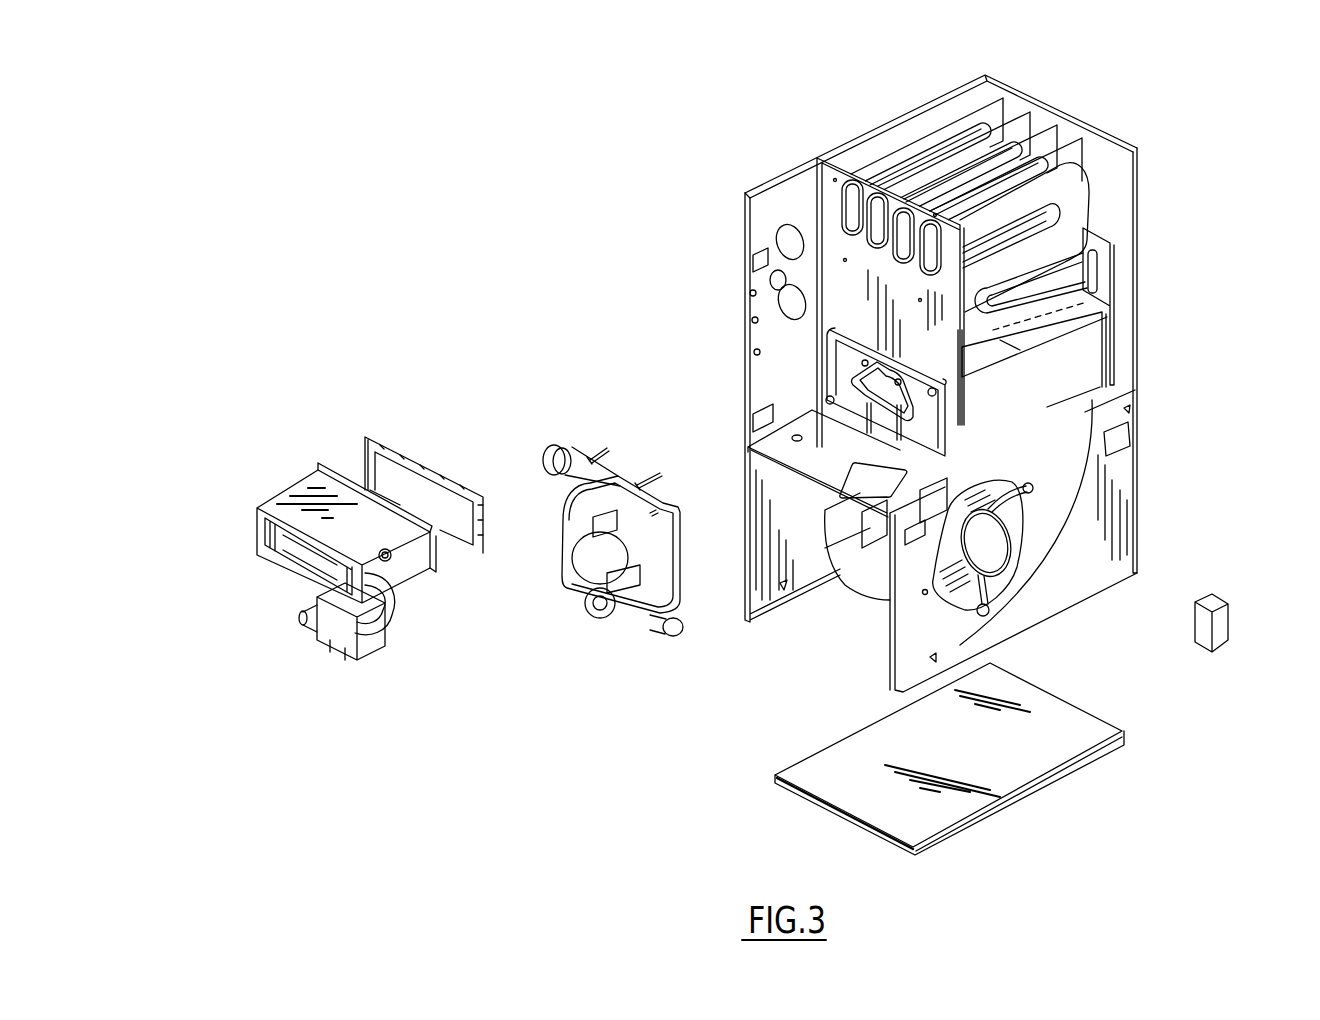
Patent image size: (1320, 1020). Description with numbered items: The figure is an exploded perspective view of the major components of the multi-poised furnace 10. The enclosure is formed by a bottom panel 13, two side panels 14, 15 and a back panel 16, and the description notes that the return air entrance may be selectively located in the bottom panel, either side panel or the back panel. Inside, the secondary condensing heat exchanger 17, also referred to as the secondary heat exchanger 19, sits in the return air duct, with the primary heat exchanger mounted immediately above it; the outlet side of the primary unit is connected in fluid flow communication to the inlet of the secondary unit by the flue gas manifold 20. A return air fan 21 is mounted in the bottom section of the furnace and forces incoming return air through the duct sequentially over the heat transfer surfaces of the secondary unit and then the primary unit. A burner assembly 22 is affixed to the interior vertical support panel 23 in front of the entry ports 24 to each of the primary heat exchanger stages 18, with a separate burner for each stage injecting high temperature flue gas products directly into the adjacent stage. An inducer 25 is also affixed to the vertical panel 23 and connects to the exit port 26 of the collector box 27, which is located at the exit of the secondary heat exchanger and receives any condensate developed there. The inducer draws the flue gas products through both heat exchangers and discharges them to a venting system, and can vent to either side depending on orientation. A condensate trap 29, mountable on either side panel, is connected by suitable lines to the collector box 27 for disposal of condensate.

The multi-poised furnace 10 is at (1112, 116).
The bottom panel 13 is at (1052, 705).
The side panel 14 is at (920, 644).
The side panel 15 is at (745, 225).
The back panel 16 is at (1137, 200).
The secondary condensing heat exchanger 17 is at (1097, 210).
The primary heat exchanger stages 18 is at (1070, 170).
The secondary heat exchanger 19 is at (1093, 341).
The flue gas manifold 20 is at (1124, 272).
The return air fan 21 is at (1044, 565).
The burner assembly 22 is at (252, 628).
The interior vertical support panel 23 is at (810, 289).
The entry ports 24 is at (837, 220).
The inducer 25 is at (565, 624).
The exit port 26 is at (868, 375).
The collector box 27 is at (965, 415).
The condensate trap 29 is at (1228, 618).